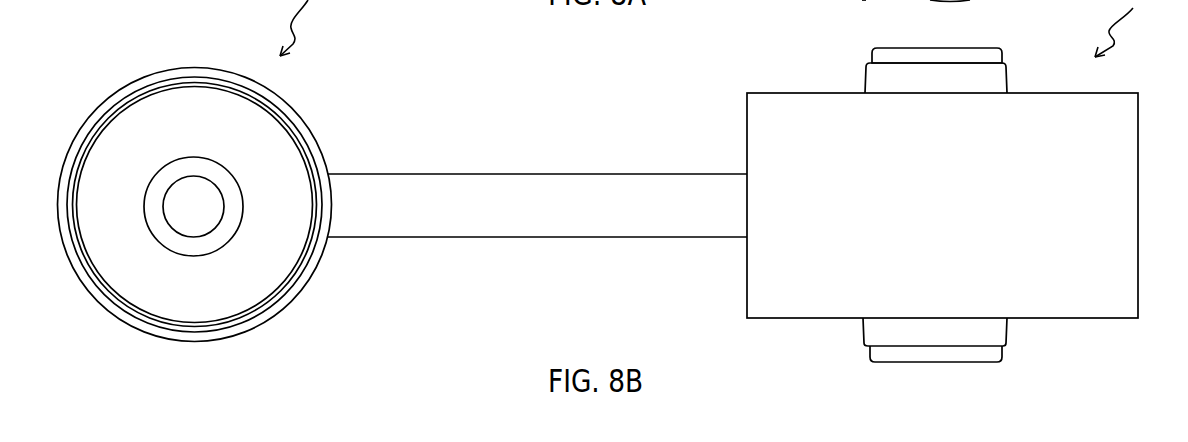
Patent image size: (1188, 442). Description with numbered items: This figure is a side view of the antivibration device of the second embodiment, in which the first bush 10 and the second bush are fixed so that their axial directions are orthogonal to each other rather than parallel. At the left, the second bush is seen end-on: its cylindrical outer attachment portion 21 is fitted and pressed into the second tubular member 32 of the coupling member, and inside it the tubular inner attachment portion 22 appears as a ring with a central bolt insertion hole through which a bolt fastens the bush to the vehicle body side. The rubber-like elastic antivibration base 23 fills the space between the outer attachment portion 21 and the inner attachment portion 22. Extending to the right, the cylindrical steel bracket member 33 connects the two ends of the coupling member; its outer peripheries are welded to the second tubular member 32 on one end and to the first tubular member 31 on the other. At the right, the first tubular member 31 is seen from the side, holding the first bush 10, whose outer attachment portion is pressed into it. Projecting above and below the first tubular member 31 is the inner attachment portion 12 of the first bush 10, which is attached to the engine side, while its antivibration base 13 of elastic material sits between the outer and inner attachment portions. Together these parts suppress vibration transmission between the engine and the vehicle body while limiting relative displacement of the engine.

The first bush 10 is at (1126, 28).
The inner attachment portion 12 is at (960, 53).
The antivibration base 13 is at (863, 2).
The outer attachment portion 21 is at (135, 103).
The inner attachment portion 22 is at (207, 168).
The antivibration base 23 is at (253, 293).
The first tubular member 31 is at (775, 265).
The second tubular member 32 is at (293, 121).
The bracket member 33 is at (497, 188).